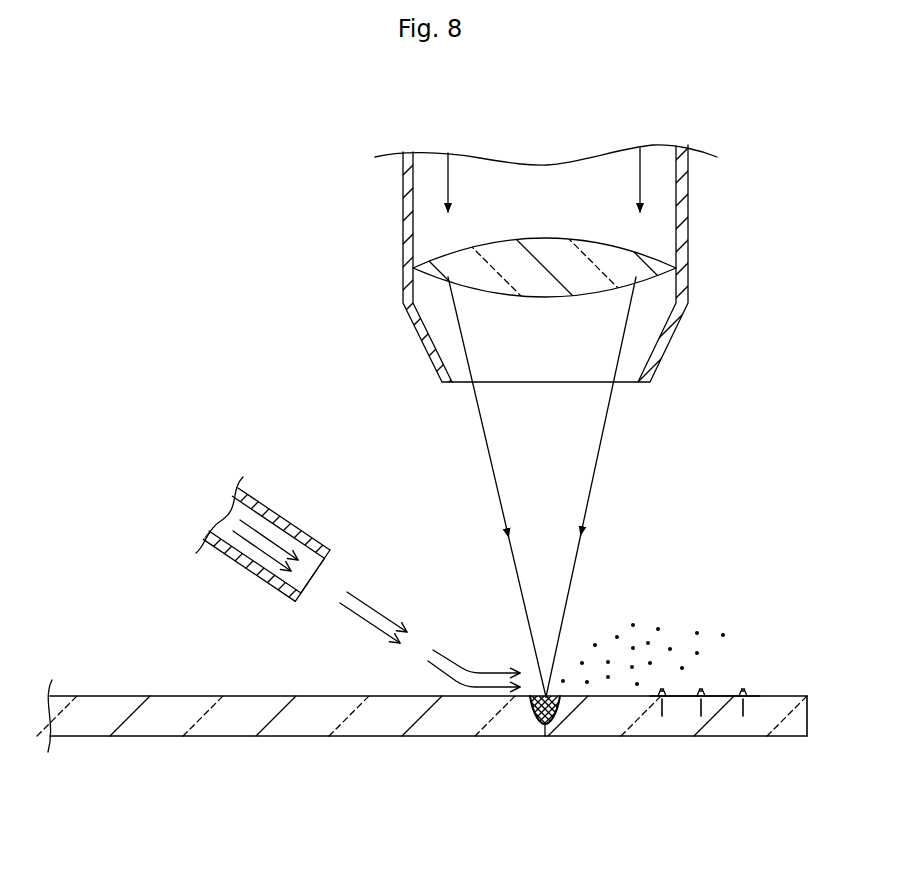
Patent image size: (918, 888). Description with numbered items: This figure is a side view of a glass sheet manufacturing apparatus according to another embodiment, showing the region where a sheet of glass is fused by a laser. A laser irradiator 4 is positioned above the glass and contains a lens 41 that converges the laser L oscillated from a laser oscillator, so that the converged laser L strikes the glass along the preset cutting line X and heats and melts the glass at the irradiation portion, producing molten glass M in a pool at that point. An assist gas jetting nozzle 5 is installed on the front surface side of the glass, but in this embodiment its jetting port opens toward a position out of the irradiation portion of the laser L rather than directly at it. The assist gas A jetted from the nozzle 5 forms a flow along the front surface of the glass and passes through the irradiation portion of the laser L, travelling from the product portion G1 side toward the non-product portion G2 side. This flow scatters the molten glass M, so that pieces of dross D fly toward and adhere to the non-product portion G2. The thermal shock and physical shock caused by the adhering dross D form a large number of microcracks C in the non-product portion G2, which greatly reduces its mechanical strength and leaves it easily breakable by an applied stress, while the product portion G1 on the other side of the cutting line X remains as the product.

The laser irradiator 4 is at (688, 205).
The lens 41 is at (545, 300).
The assist gas jetting nozzle 5 is at (292, 518).
The laser L is at (487, 440).
The assist gas A is at (430, 637).
The product portion G1 is at (197, 696).
The non-product portion G2 is at (720, 696).
The dross D is at (658, 629).
The preset cutting line X is at (542, 727).
The molten glass M is at (557, 706).
The microcracks C is at (745, 706).